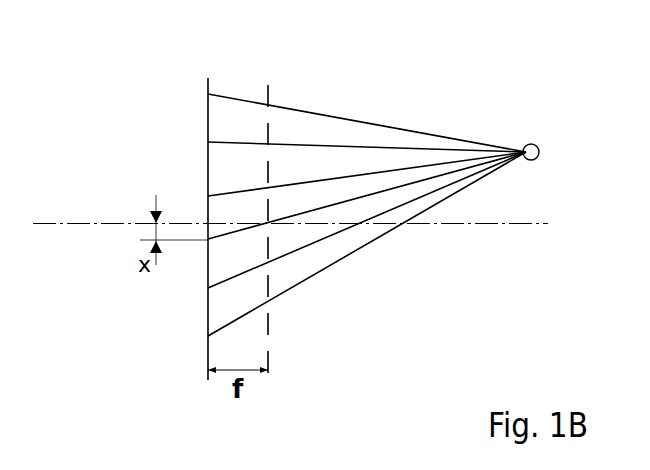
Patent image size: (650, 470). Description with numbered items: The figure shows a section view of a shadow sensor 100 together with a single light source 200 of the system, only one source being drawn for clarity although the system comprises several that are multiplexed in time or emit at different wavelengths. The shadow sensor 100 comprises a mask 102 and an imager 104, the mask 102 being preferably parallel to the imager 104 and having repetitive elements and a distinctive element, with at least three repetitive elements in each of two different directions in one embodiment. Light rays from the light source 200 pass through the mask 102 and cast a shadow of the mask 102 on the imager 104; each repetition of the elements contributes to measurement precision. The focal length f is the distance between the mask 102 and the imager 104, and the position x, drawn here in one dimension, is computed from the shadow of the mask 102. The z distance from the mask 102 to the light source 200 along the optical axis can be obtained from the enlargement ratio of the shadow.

The shadow sensor 100 is at (146, 90).
The mask 102 is at (269, 325).
The imager 104 is at (207, 337).
The light source 200 is at (539, 142).